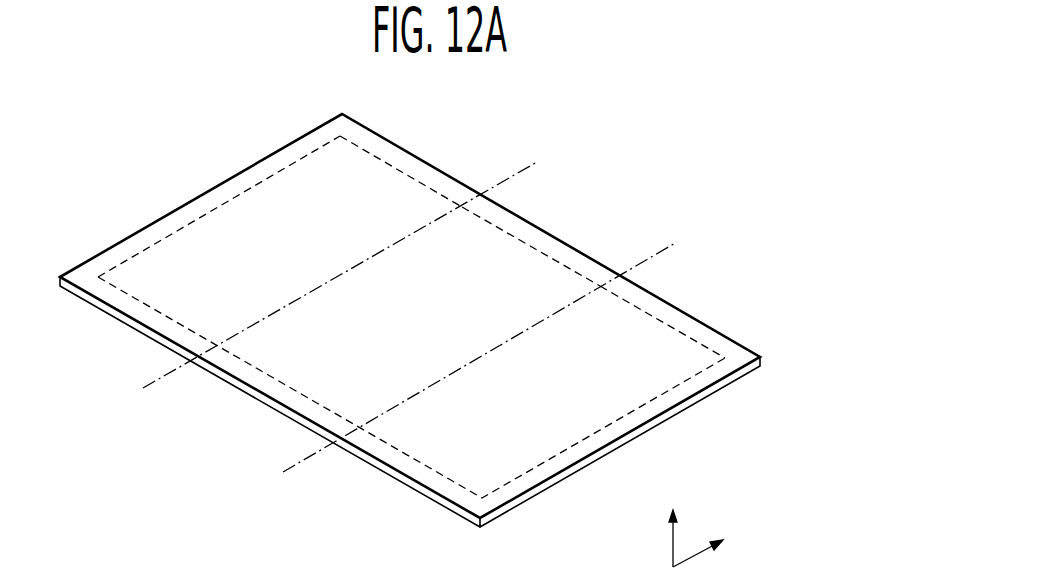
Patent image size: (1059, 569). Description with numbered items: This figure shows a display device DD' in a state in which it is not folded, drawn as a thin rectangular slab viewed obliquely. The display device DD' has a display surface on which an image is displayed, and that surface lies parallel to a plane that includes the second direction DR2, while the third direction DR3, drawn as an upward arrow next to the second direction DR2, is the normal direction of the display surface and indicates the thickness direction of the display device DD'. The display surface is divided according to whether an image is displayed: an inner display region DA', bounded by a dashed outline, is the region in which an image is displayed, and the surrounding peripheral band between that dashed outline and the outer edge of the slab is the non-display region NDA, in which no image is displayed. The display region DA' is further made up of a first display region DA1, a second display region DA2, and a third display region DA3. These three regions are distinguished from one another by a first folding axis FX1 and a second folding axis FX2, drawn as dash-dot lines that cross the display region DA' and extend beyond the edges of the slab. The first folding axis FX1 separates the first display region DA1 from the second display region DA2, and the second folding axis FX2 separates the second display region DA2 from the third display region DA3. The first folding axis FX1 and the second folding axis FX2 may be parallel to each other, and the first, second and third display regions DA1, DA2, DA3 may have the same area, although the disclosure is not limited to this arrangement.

The non-display region NDA is at (160, 229).
The display region DA' is at (411, 309).
The first display region DA1 is at (388, 181).
The second display region DA2 is at (525, 260).
The third display region DA3 is at (648, 332).
The first folding axis FX1 is at (322, 284).
The second folding axis FX2 is at (461, 366).
The display device DD' is at (735, 118).
The second direction DR2 is at (718, 544).
The third direction DR3 is at (673, 520).